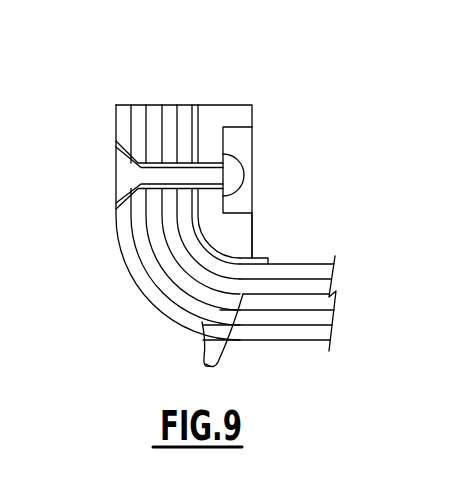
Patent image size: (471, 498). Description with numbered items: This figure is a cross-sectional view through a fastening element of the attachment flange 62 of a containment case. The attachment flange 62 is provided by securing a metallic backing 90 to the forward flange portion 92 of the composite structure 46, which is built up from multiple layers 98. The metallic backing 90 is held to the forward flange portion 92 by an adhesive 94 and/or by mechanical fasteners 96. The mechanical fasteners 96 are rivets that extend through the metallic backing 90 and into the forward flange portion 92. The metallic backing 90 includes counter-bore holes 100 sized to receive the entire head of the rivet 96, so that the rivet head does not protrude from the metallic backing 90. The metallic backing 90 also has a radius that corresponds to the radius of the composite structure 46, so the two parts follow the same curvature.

The composite structure 46 is at (279, 352).
The attachment flange 62 is at (259, 165).
The metallic backing 90 is at (242, 230).
The forward flange portion 92 is at (157, 110).
The adhesive 94 is at (260, 258).
The mechanical fasteners 96 is at (152, 177).
The layers 98 is at (205, 363).
The counter-bore holes 100 is at (228, 138).